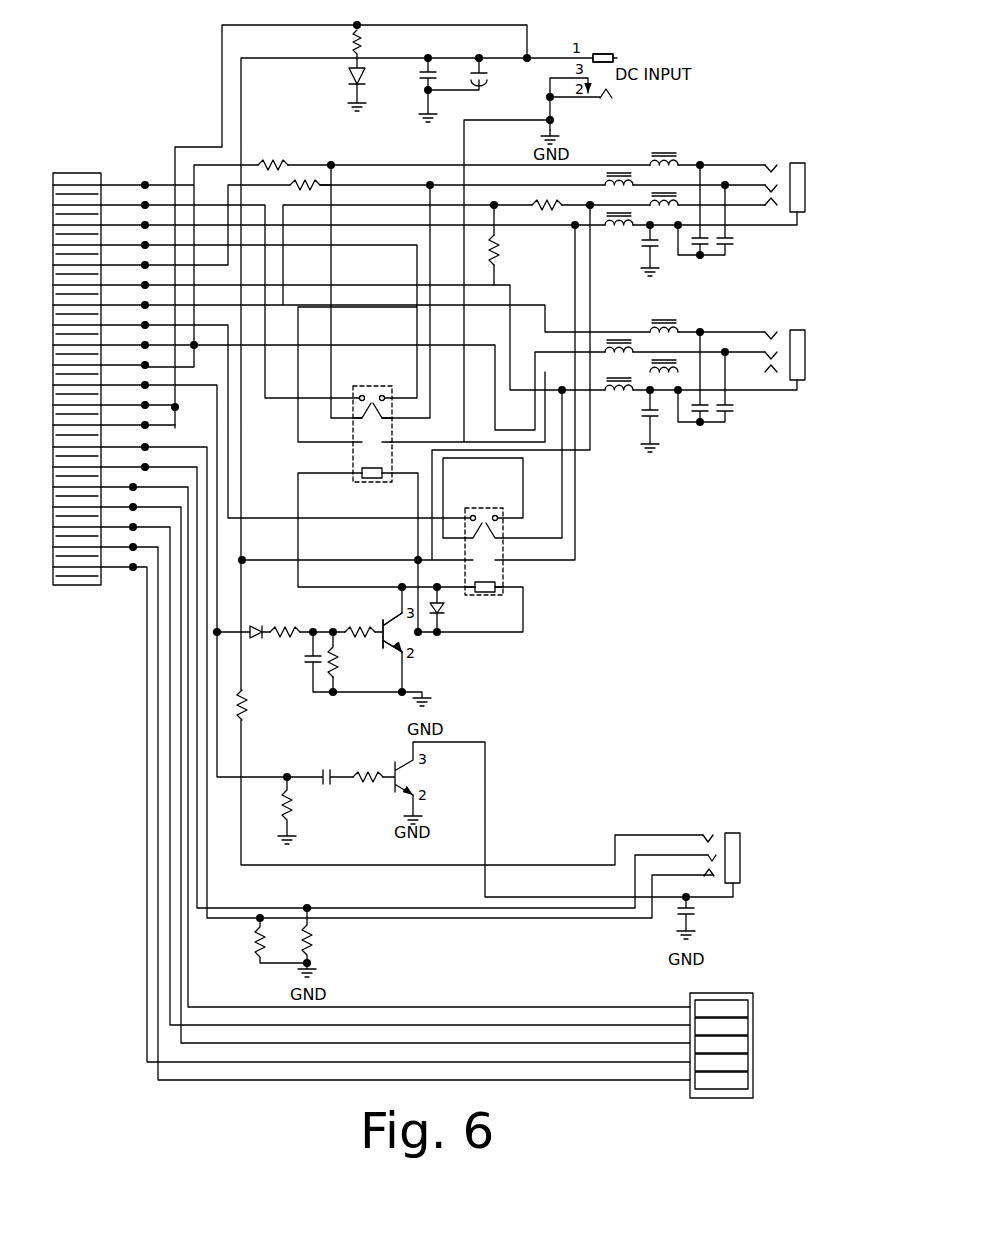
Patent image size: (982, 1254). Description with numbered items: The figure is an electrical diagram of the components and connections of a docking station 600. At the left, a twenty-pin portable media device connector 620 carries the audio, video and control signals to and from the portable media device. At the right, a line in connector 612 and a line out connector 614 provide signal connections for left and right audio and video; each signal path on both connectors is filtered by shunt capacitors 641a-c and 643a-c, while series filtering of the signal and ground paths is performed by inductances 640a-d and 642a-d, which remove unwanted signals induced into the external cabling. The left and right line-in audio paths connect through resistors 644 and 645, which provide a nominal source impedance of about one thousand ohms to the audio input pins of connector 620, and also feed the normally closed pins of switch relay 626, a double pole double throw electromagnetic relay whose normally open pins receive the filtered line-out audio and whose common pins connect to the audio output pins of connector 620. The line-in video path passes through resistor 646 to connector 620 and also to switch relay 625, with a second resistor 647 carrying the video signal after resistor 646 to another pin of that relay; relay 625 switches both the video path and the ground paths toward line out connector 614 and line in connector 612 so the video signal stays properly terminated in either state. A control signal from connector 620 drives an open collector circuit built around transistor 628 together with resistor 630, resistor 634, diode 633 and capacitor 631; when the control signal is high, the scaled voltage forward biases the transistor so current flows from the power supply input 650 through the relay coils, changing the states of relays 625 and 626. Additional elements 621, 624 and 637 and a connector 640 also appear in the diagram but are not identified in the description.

The docking station 600 is at (126, 70).
The portable media device connector 620 is at (108, 172).
The resistor 644 is at (276, 160).
The resistor 645 is at (314, 178).
The resistor 646 is at (548, 210).
The second resistor 647 is at (497, 265).
The power supply input 650 is at (614, 50).
The line in connector 612 is at (782, 126).
The inductances 640a-d is at (630, 212).
The shunt capacitors 641a-c is at (660, 250).
The line out connector 614 is at (781, 398).
The inductances 642a-d is at (651, 344).
The shunt capacitors 643a-c is at (740, 415).
The switch relay 626 is at (370, 384).
The switch relay 625 is at (486, 504).
The diode 621 is at (446, 611).
The diode 633 is at (258, 622).
The resistor 637 is at (284, 626).
The resistor 624 is at (348, 628).
The transistor 628 is at (380, 620).
The resistor 630 is at (338, 664).
The capacitor 631 is at (300, 672).
The resistor 634 is at (298, 800).
The USB connector 640 is at (746, 964).